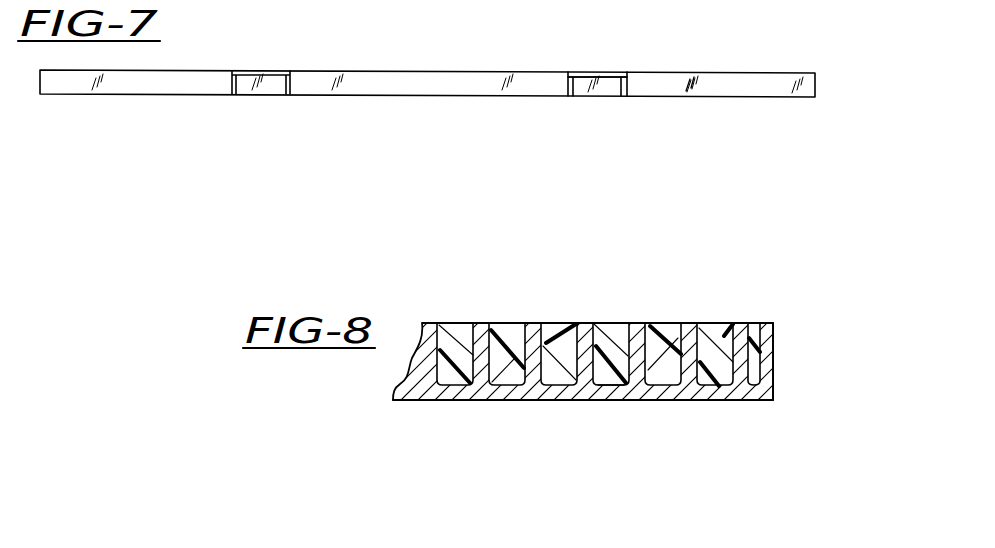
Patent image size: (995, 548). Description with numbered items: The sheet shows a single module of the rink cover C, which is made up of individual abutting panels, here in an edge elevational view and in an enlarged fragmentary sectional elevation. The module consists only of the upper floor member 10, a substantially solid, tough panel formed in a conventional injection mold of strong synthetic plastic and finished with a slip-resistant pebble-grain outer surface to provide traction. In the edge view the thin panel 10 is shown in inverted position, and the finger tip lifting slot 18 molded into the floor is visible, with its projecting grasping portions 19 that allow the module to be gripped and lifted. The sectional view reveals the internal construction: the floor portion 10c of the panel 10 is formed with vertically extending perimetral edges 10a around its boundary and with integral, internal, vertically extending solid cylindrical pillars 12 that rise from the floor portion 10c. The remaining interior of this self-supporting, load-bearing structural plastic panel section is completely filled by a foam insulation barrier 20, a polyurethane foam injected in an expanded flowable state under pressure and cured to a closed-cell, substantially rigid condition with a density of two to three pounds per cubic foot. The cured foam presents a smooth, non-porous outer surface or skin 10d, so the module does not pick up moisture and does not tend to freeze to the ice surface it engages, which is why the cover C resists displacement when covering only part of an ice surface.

In FIG. 8, the upper floor member 10 is at (428, 312).
In FIG. 7, the perimetral edges 10a is at (732, 88).
In FIG. 8, the perimetral edges 10a is at (772, 357).
In FIG. 7, the floor portion 10c is at (687, 80).
In FIG. 8, the floor portion 10c is at (443, 400).
In FIG. 8, the outer surface or skin 10d is at (718, 323).
In FIG. 8, the cylindrical pillars 12 is at (598, 340).
In FIG. 7, the finger tip lifting slot 18 is at (586, 86).
In FIG. 7, the grasping portions 19 is at (605, 76).
In FIG. 8, the foam insulation barrier 20 is at (605, 385).
In FIG. 7, the rink cover C is at (796, 110).